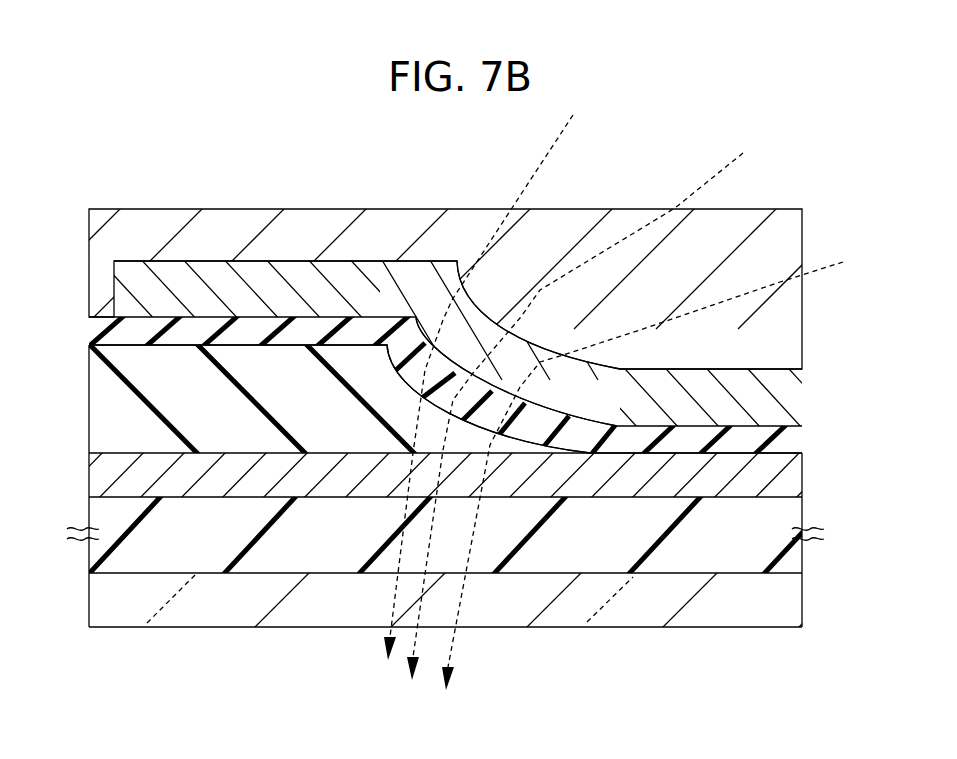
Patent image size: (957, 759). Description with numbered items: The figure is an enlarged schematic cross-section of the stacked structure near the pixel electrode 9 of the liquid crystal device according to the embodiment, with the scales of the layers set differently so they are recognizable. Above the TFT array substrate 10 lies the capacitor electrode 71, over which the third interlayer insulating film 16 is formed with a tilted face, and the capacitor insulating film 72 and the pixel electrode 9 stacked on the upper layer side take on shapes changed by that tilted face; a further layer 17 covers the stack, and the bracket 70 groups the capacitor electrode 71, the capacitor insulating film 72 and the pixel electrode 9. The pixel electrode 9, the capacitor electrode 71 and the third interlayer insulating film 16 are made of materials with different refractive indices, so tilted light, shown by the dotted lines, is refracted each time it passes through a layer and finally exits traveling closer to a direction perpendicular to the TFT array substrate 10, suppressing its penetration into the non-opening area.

The planarizing layer 17 is at (780, 231).
The pixel electrode 9 is at (785, 390).
The capacitor insulating film 72 is at (785, 437).
The capacitor electrode 71 is at (454, 475).
The multilayer structure 70 is at (477, 371).
The third interlayer insulating film 16 is at (103, 386).
The TFT array substrate 10 is at (781, 606).